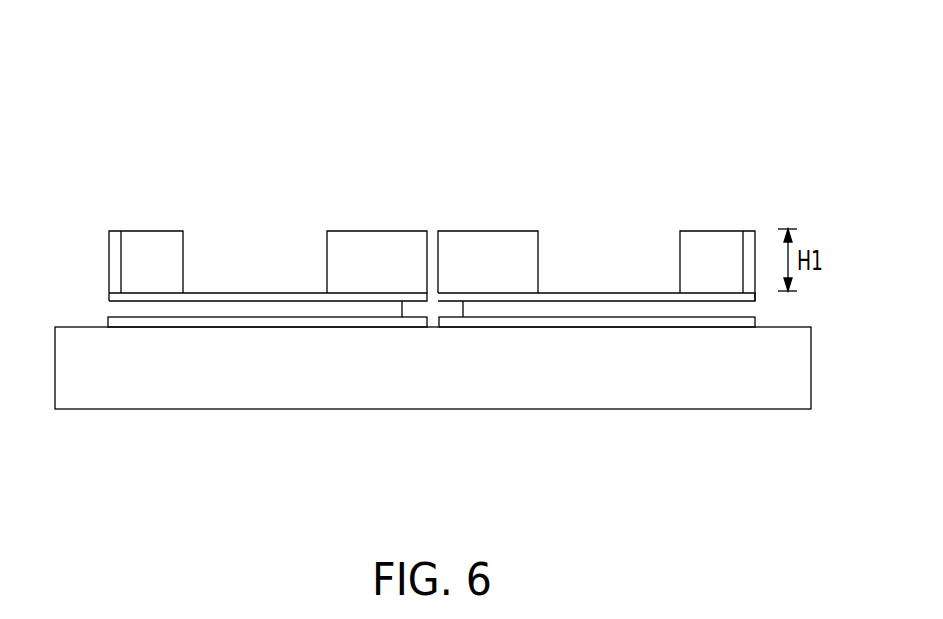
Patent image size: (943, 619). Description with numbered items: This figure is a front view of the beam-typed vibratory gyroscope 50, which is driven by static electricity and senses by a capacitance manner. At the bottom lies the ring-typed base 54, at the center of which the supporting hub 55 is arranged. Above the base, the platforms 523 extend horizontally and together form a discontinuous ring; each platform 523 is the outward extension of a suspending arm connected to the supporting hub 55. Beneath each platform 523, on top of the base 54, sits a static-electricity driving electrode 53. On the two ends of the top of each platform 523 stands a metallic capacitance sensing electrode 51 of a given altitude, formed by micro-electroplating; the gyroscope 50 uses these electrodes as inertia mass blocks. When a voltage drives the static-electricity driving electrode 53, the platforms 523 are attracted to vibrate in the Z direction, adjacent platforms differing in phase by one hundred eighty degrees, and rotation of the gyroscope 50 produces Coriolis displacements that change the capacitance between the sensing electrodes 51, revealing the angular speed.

The beam-typed vibratory gyroscope 50 is at (218, 97).
The capacitance sensing electrode 51 is at (153, 237).
The platform 523 is at (253, 297).
The static-electricity driving electrode 53 is at (253, 322).
The ring-typed base 54 is at (137, 397).
The supporting hub 55 is at (448, 310).